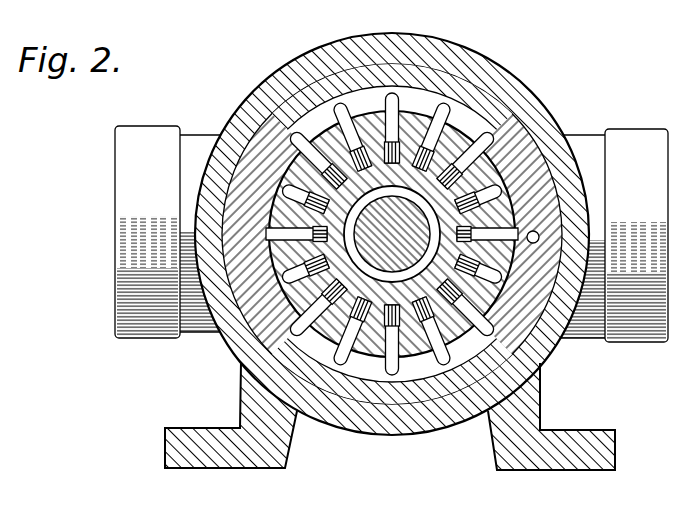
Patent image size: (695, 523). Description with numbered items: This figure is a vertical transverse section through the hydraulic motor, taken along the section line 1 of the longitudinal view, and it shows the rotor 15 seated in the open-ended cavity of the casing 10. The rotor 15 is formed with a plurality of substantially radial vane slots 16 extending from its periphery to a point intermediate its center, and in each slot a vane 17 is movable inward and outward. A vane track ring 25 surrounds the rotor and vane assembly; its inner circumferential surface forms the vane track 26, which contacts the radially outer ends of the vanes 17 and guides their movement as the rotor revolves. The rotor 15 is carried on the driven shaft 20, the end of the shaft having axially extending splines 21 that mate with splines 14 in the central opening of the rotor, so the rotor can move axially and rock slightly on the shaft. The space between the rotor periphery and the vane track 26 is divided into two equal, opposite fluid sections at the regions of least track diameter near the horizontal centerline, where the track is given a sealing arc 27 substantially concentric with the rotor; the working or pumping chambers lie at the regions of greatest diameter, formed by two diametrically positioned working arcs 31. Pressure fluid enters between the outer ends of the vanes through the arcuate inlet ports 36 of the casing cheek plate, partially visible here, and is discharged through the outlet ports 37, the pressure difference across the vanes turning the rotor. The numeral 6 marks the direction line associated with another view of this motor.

The machine 1 is at (210, 47).
The section line 6 is at (400, 286).
The casing 10 is at (552, 125).
The mating splines 14 is at (352, 188).
The rotor 15 is at (416, 288).
The vane slots 16 is at (358, 157).
The vane 17 is at (455, 98).
The driven shaft 20 is at (392, 234).
The shaft splines 21 is at (392, 230).
The vane track ring 25 is at (242, 110).
The vane track 26 is at (316, 112).
The sealing arc 27 is at (270, 218).
The working arc 31 is at (388, 62).
The inlet ports 36 is at (420, 100).
The outlet ports 37 is at (374, 88).